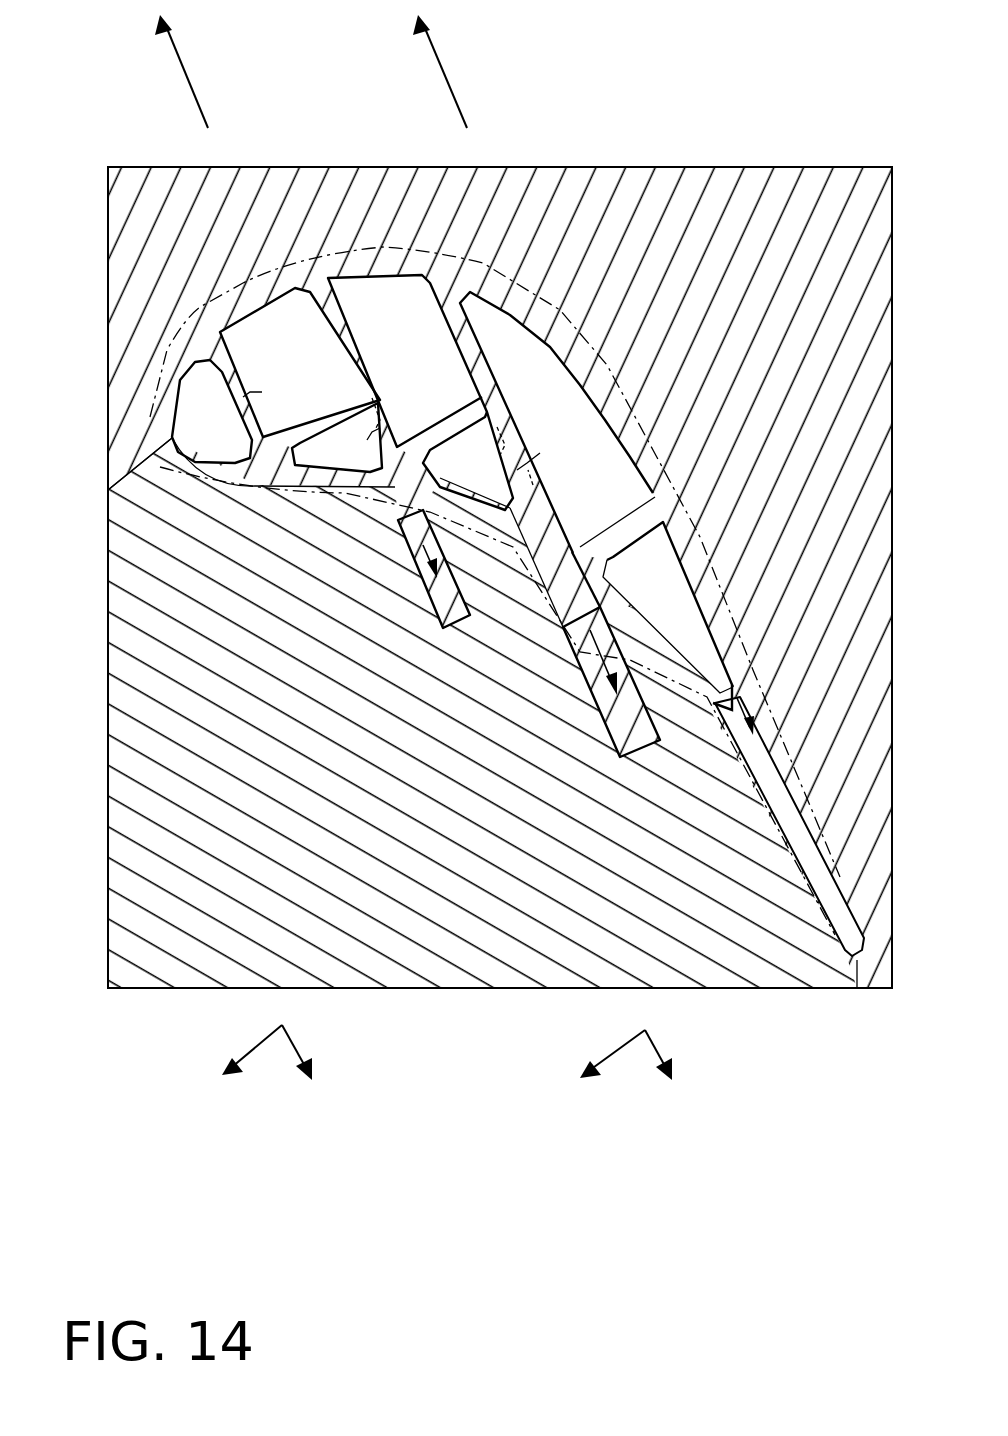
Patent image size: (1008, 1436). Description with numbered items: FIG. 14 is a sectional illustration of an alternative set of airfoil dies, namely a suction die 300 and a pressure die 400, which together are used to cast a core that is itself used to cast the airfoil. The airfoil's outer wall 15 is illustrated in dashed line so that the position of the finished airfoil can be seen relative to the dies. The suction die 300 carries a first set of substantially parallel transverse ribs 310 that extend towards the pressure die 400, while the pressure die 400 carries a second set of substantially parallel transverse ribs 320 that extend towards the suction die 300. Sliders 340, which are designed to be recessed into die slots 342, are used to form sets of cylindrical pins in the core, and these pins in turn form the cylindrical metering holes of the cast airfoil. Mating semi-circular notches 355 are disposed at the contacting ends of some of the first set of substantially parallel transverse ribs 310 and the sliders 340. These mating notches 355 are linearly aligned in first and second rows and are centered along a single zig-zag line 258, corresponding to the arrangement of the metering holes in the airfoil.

The suction die 300 is at (495, 167).
The outer wall 15 is at (600, 663).
The first set of substantially parallel transverse ribs 310 is at (327, 324).
The second set of substantially parallel transverse ribs 320 is at (332, 405).
The die slots 342 is at (452, 577).
The mating semi-circular notches 355 is at (243, 397).
The zig-zag line 258 is at (372, 398).
The sliders 340 is at (393, 515).
The pressure die 400 is at (450, 990).